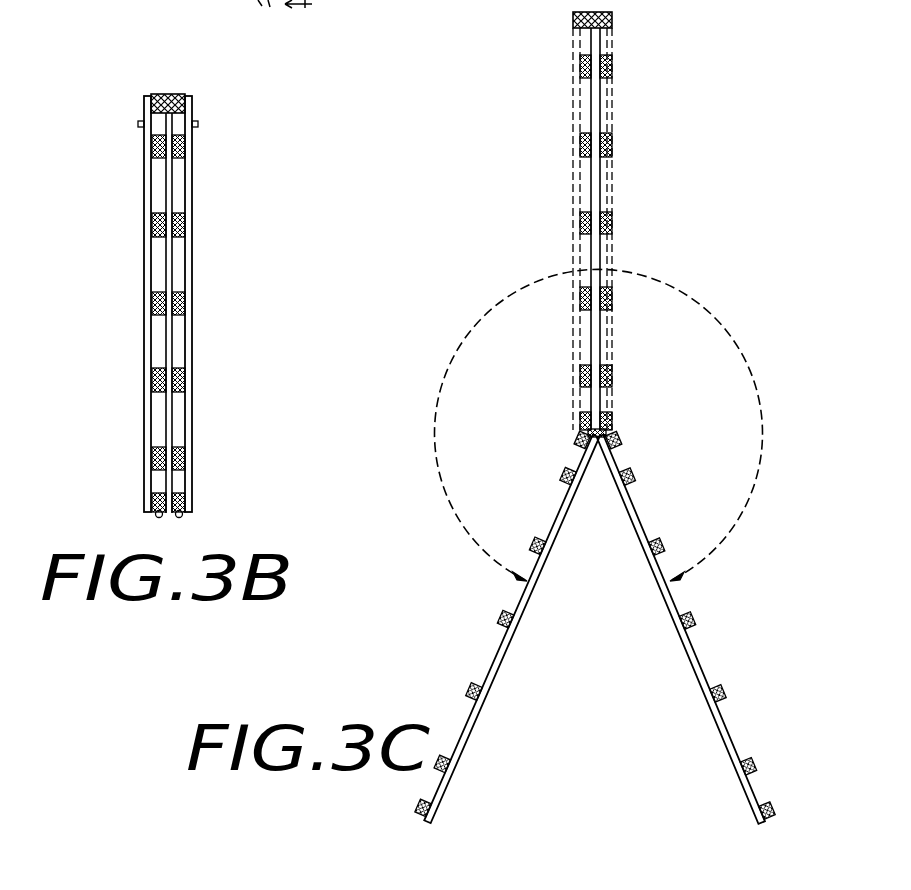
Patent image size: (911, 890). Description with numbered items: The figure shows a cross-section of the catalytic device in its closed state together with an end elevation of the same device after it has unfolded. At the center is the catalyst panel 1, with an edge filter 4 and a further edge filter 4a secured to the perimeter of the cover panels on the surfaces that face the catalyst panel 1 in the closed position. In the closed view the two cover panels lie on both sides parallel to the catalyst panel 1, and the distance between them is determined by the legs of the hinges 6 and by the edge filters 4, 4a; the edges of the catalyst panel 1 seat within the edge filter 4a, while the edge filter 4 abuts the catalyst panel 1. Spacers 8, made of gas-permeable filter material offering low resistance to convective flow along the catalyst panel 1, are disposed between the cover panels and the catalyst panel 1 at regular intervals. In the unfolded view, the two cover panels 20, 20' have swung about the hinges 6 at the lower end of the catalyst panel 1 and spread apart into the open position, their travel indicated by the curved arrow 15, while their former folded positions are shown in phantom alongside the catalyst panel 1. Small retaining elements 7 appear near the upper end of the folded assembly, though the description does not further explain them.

In FIG. 3B, the catalyst panel 1 is at (170, 190).
In FIG. 3C, the catalyst panel 1 is at (596, 107).
In FIG. 3B, the edge filter 4 is at (151, 96).
In FIG. 3C, the edge filter 4 is at (612, 23).
In FIG. 3B, the edge filter 4a is at (186, 500).
In FIG. 3C, the edge filter 4a is at (612, 417).
In FIG. 3B, the hinge 6 is at (184, 515).
In FIG. 3C, the hinge 6 is at (617, 437).
In FIG. 3B, the retaining pins 7 is at (144, 237).
In FIG. 3B, the spacer 8 is at (185, 300).
In FIG. 3C, the spacer 8 is at (612, 222).
In FIG. 3C, the arrow 15 is at (741, 360).
In FIG. 3B, the first leg 20 is at (112, 304).
In FIG. 3C, the first leg 20 is at (505, 425).
In FIG. 3B, the second leg 20' is at (219, 304).
In FIG. 3C, the second leg 20' is at (687, 426).